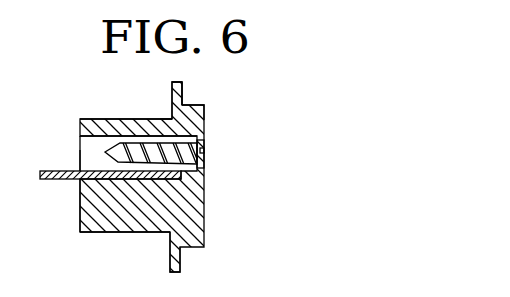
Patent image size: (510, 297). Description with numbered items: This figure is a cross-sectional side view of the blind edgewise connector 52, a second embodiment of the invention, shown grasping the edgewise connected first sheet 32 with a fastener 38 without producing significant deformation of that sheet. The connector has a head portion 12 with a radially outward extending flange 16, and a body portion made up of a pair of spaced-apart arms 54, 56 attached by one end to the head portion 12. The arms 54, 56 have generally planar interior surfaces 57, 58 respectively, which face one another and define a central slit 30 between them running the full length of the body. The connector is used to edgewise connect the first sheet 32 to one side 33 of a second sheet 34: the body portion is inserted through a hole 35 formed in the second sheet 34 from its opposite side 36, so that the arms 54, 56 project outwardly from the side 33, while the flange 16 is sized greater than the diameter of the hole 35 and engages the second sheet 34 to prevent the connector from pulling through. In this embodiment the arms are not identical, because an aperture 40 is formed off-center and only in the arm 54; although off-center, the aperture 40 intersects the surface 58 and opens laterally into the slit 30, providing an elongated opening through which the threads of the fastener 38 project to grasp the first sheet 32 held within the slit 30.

The head portion 12 is at (205, 185).
The flange 16 is at (205, 107).
The central slit 30 is at (82, 160).
The first sheet 32 is at (50, 180).
The one side of second sheet 33 is at (170, 116).
The second sheet 34 is at (180, 83).
The hole 35 is at (165, 120).
The opposite side of second sheet 36 is at (182, 98).
The fastener 38 is at (205, 145).
The aperture 40 is at (85, 150).
The blind edgewise connector 52 is at (125, 235).
The arm 54 is at (82, 119).
The arm 56 is at (151, 232).
The interior surface 57 is at (88, 203).
The interior surface 58 is at (99, 146).